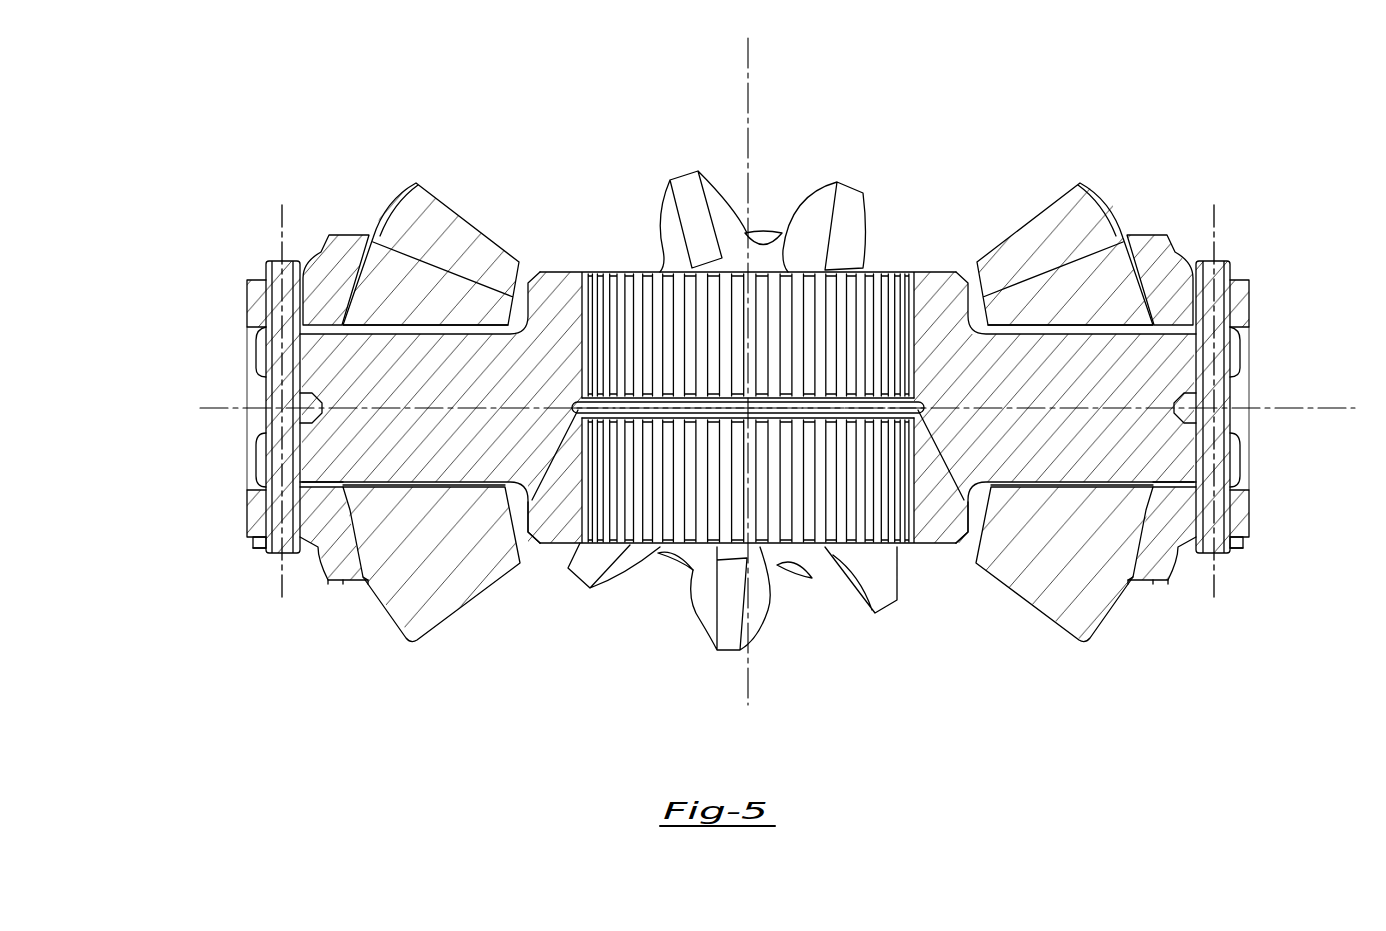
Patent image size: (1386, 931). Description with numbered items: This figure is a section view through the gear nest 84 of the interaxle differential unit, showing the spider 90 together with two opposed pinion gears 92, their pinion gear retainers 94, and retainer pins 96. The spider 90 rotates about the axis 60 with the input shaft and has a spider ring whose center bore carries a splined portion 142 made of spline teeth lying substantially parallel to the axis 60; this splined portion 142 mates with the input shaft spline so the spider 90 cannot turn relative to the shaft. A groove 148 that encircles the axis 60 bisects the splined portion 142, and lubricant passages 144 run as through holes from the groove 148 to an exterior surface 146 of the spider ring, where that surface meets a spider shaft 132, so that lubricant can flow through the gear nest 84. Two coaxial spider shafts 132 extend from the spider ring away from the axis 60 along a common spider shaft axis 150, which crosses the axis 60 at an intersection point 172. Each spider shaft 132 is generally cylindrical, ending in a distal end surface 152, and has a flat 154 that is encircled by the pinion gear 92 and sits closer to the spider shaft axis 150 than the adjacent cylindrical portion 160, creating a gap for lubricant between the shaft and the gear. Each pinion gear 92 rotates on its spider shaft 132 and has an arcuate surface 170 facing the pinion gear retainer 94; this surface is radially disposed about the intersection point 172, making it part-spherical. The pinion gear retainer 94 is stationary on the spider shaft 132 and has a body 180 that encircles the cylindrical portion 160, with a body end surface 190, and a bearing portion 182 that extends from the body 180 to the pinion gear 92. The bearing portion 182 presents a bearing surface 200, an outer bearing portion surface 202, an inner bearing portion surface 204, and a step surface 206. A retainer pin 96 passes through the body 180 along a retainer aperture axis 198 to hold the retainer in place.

The axis 60 is at (748, 97).
The gear nest 84 is at (637, 120).
The spider 90 is at (553, 268).
The pinion gear 92 is at (418, 183).
The pinion gear retainer 94 is at (327, 236).
The retainer pin 96 is at (266, 265).
The spider shaft 132 is at (453, 423).
The splined portion 142 is at (878, 268).
The lubricant passage 144 is at (531, 466).
The exterior surface 146 is at (520, 530).
The groove 148 is at (876, 395).
The spider shaft axis 150 is at (238, 412).
The distal end surface 152 is at (256, 348).
The flat 154 is at (427, 334).
The cylindrical portion 160 is at (247, 493).
The arcuate surface 170 is at (343, 583).
The intersection point 172 is at (745, 400).
The body 180 is at (253, 548).
The bearing portion 182 is at (327, 583).
The body end surface 190 is at (247, 300).
The retainer aperture axis 198 is at (277, 212).
The bearing surface 200 is at (350, 520).
The outer bearing portion surface 202 is at (369, 583).
The inner bearing portion surface 204 is at (330, 486).
The step surface 206 is at (322, 552).